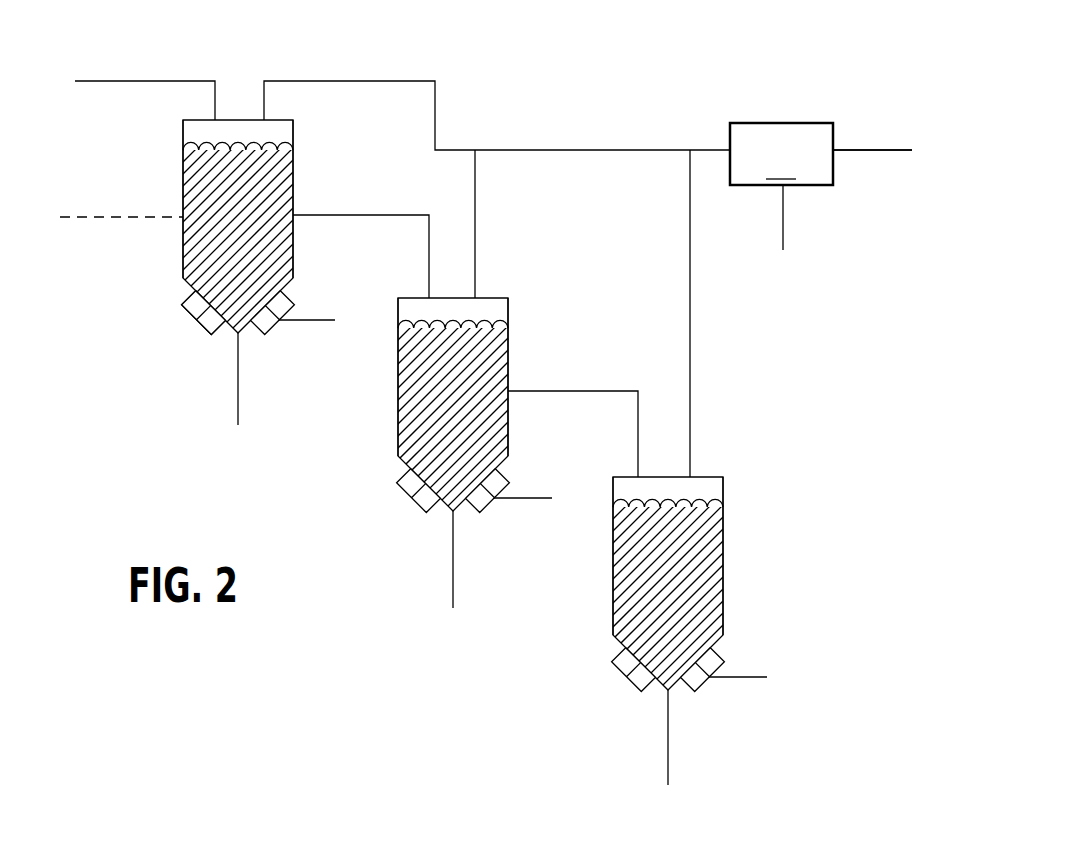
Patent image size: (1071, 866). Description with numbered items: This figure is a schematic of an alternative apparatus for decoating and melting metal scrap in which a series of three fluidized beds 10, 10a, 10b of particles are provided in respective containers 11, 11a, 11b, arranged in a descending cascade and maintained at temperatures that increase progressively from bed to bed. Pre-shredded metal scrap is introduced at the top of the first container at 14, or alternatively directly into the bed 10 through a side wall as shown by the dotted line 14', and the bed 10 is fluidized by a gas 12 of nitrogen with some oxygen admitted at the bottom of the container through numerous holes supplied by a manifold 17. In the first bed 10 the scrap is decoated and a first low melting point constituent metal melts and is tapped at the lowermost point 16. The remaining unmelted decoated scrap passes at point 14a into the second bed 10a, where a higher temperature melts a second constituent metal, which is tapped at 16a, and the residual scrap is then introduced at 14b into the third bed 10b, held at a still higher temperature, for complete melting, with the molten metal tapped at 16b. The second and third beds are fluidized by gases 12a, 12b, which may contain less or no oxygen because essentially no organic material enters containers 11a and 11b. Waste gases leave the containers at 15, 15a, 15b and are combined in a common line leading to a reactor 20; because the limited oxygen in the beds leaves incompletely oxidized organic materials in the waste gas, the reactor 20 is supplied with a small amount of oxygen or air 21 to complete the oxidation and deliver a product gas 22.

The fluidized bed 10 is at (228, 253).
The second fluidized bed 10a is at (480, 340).
The third fluidized bed 10b is at (705, 552).
The container 11 is at (293, 160).
The second container 11a is at (398, 412).
The third container 11b is at (613, 585).
The fluidizing gas 12 is at (310, 322).
The second fluidizing gas 12a is at (530, 500).
The third fluidizing gas 12b is at (755, 678).
The scrap inlet 14 is at (145, 67).
The side-wall scrap inlet 14' is at (121, 178).
The second scrap inlet 14a is at (384, 213).
The third scrap inlet 14b is at (607, 388).
The waste gas outlet 15 is at (346, 81).
The second waste gas outlet 15a is at (475, 200).
The third waste gas outlet 15b is at (690, 315).
The molten metal tap 16 is at (238, 378).
The second molten metal tap 16a is at (453, 582).
The third molten metal tap 16b is at (668, 757).
The manifold 17 is at (190, 317).
The reactor 20 is at (781, 154).
The oxygen or air supply 21 is at (783, 232).
The product gas 22 is at (876, 148).